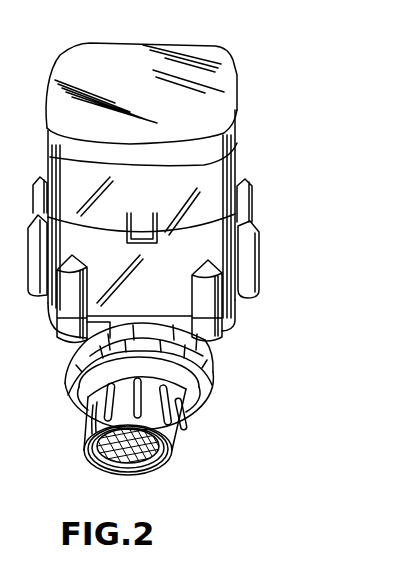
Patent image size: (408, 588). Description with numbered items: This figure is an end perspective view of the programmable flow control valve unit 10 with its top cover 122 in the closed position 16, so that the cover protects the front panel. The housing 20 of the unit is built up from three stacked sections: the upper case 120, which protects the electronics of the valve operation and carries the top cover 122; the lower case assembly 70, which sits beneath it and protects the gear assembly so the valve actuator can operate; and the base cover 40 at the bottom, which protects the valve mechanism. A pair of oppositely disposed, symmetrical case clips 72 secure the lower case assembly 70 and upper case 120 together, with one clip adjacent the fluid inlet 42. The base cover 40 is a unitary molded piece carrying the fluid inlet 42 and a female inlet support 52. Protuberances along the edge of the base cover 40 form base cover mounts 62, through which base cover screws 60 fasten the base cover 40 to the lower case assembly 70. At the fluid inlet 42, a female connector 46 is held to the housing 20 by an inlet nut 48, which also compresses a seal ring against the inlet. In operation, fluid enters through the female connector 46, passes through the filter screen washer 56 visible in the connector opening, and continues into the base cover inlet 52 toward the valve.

The programmable flow control valve unit 10 is at (251, 44).
The closed position 16 is at (248, 74).
The housing 20 is at (297, 38).
The top cover 122 is at (224, 113).
The upper case 120 is at (234, 157).
The case clips 72 is at (148, 222).
The lower case assembly 70 is at (232, 250).
The base cover mounts 62 is at (246, 296).
The base cover 40 is at (232, 312).
The base cover screws 60 is at (212, 338).
The female inlet support 52 is at (212, 373).
The inlet nut 48 is at (198, 420).
The female connector 46 is at (188, 448).
The fluid inlet 42 is at (114, 487).
The filter screen washer 56 is at (148, 458).